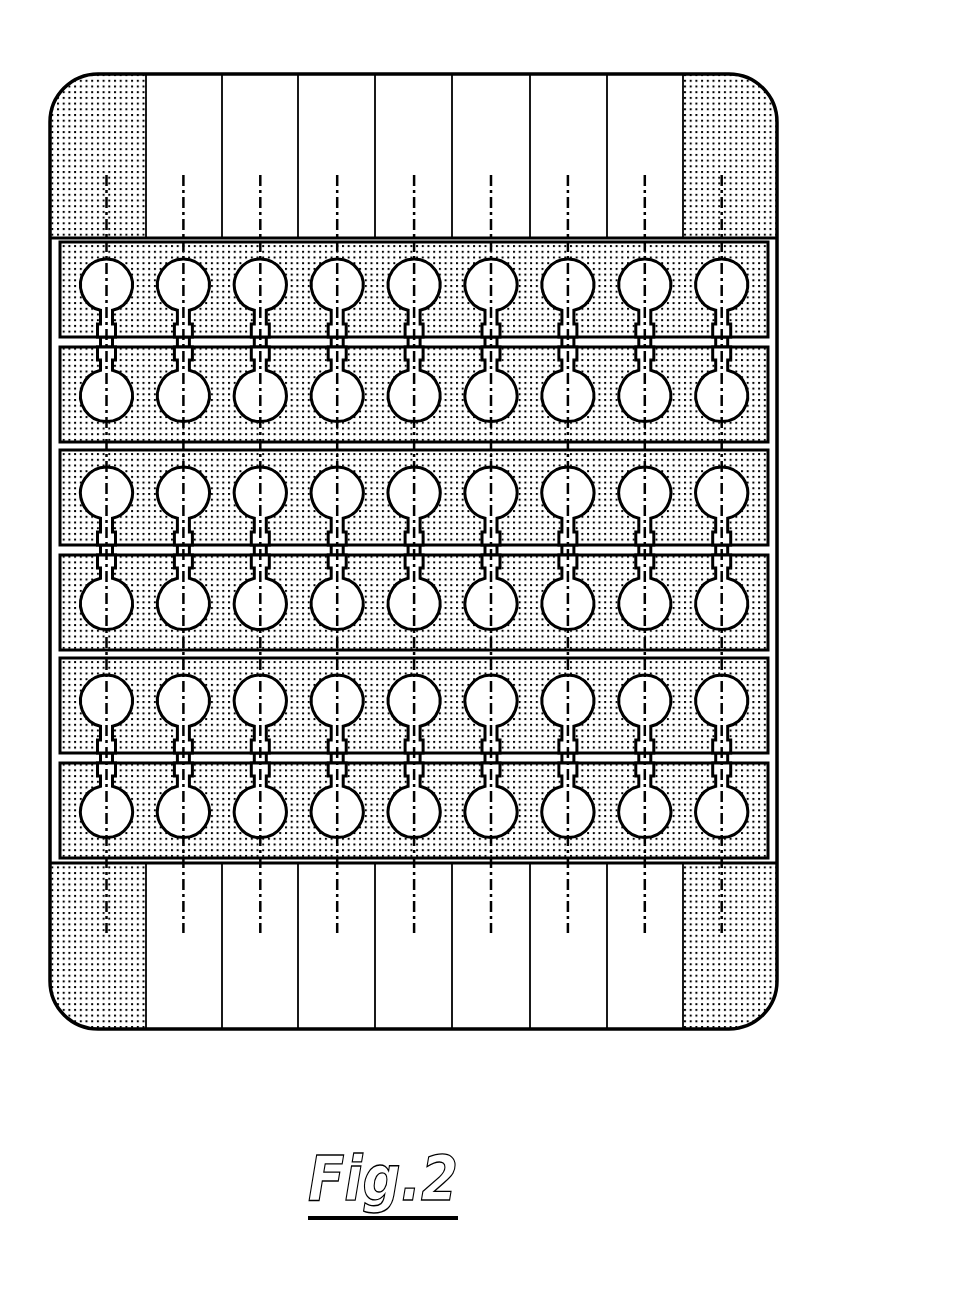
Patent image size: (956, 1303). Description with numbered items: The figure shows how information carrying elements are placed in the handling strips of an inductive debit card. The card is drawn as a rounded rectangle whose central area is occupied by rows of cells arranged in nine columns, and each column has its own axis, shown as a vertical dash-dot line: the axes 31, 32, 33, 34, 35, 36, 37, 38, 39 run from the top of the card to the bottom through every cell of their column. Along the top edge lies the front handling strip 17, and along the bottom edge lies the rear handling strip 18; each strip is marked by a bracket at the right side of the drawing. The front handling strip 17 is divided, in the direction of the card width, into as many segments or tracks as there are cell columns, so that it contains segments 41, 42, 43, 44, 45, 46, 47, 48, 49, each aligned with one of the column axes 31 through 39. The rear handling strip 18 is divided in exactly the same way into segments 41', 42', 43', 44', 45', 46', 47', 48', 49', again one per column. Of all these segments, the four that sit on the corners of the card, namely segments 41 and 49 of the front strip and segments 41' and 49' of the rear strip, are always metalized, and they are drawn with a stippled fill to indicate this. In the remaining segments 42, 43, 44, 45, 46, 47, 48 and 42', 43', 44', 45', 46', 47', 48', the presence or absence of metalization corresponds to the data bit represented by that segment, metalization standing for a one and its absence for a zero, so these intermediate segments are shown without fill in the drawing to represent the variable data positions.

The front handling strip 17 is at (466, 119).
The rear handling strip 18 is at (468, 988).
The column axis 31 is at (105, 193).
The column axis 32 is at (183, 183).
The column axis 33 is at (255, 200).
The column axis 34 is at (335, 180).
The column axis 35 is at (415, 188).
The column axis 36 is at (493, 180).
The column axis 37 is at (567, 200).
The column axis 38 is at (644, 175).
The column axis 39 is at (720, 193).
The segment 41 is at (95, 122).
The segment 42 is at (170, 130).
The segment 43 is at (251, 119).
The segment 44 is at (330, 129).
The segment 45 is at (406, 119).
The segment 46 is at (484, 129).
The segment 47 is at (560, 119).
The segment 48 is at (636, 130).
The segment 49 is at (741, 52).
The segment 41' is at (100, 984).
The segment 42' is at (177, 987).
The segment 43' is at (262, 982).
The segment 44' is at (340, 988).
The segment 45' is at (412, 983).
The segment 46' is at (492, 988).
The segment 47' is at (568, 983).
The segment 48' is at (646, 988).
The segment 49' is at (749, 1047).